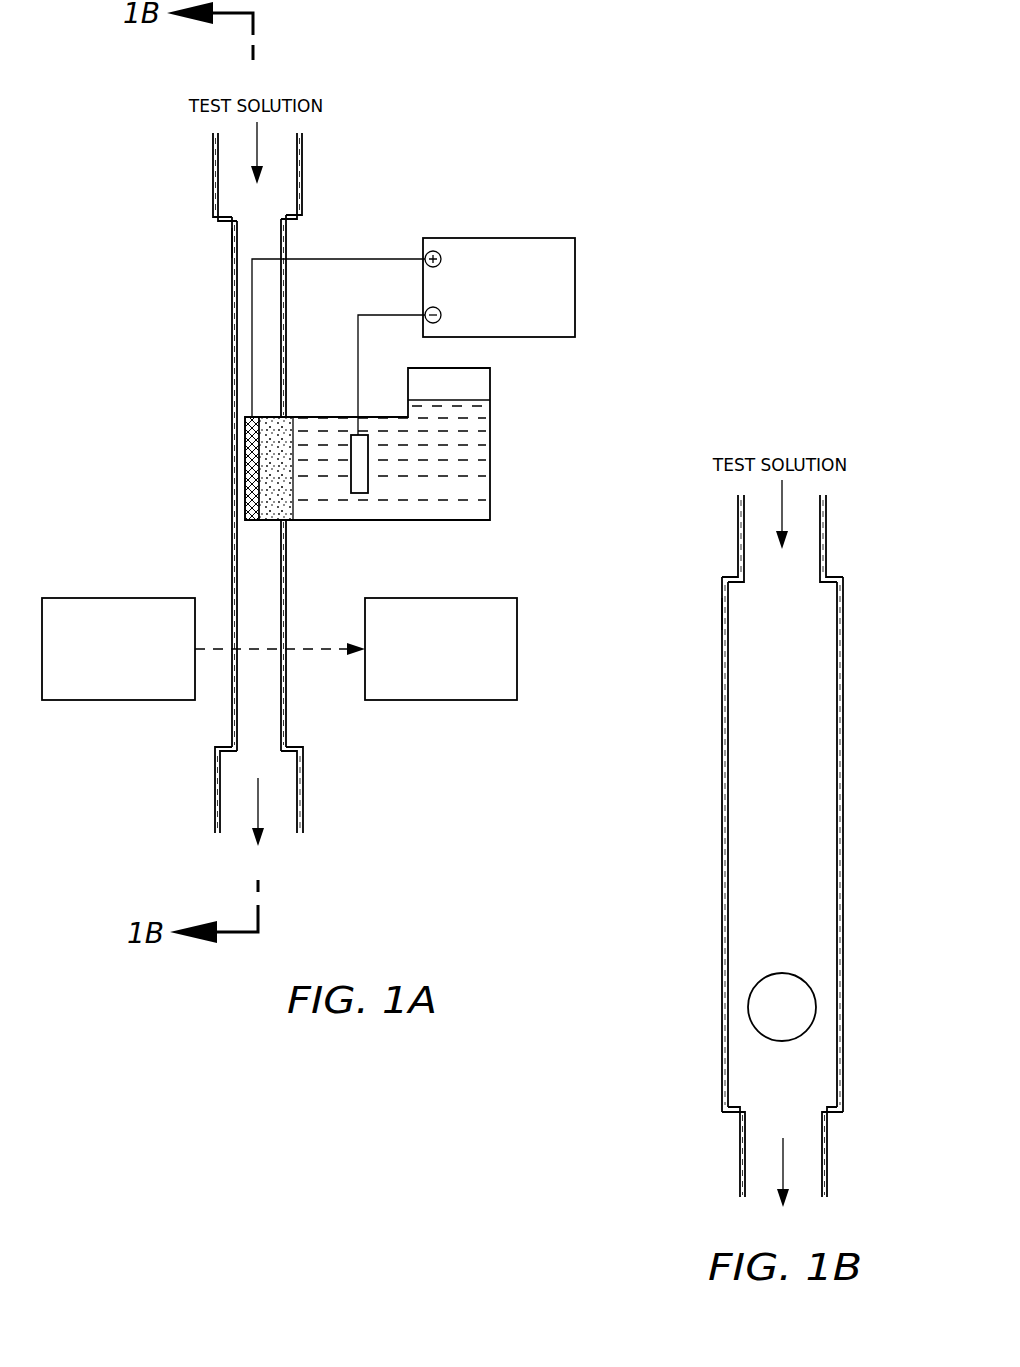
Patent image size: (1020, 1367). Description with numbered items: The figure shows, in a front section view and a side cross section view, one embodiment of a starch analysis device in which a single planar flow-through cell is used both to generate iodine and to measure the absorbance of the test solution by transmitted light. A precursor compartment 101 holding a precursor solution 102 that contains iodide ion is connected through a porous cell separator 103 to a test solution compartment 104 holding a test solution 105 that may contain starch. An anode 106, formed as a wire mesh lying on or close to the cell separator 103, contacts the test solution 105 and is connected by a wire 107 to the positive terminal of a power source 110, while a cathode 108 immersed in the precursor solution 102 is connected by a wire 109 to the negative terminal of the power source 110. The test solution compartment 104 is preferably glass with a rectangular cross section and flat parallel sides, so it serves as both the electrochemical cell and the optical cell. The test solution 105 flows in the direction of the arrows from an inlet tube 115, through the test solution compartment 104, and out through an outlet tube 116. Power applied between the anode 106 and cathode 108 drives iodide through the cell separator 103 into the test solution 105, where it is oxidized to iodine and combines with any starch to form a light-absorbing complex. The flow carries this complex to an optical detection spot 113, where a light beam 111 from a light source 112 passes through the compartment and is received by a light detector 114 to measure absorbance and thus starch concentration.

In FIG. 1A, the precursor compartment 101 is at (490, 398).
In FIG. 1A, the precursor solution 102 is at (480, 487).
In FIG. 1A, the cell separator 103 is at (270, 505).
In FIG. 1A, the test solution compartment 104 is at (233, 253).
In FIG. 1B, the test solution compartment 104 is at (727, 628).
In FIG. 1A, the test solution 105 is at (240, 342).
In FIG. 1B, the test solution 105 is at (730, 692).
In FIG. 1A, the anode 106 is at (208, 468).
In FIG. 1A, the wire 107 is at (323, 258).
In FIG. 1A, the cathode 108 is at (359, 493).
In FIG. 1A, the wire 109 is at (358, 365).
In FIG. 1A, the power source 110 is at (465, 238).
In FIG. 1A, the light beam 111 is at (305, 648).
In FIG. 1A, the light source 112 is at (83, 700).
In FIG. 1B, the optical detection spot 113 is at (757, 990).
In FIG. 1A, the light detector 114 is at (405, 700).
In FIG. 1A, the inlet tube 115 is at (302, 170).
In FIG. 1B, the inlet tube 115 is at (738, 537).
In FIG. 1A, the outlet tube 116 is at (303, 807).
In FIG. 1B, the outlet tube 116 is at (745, 1077).